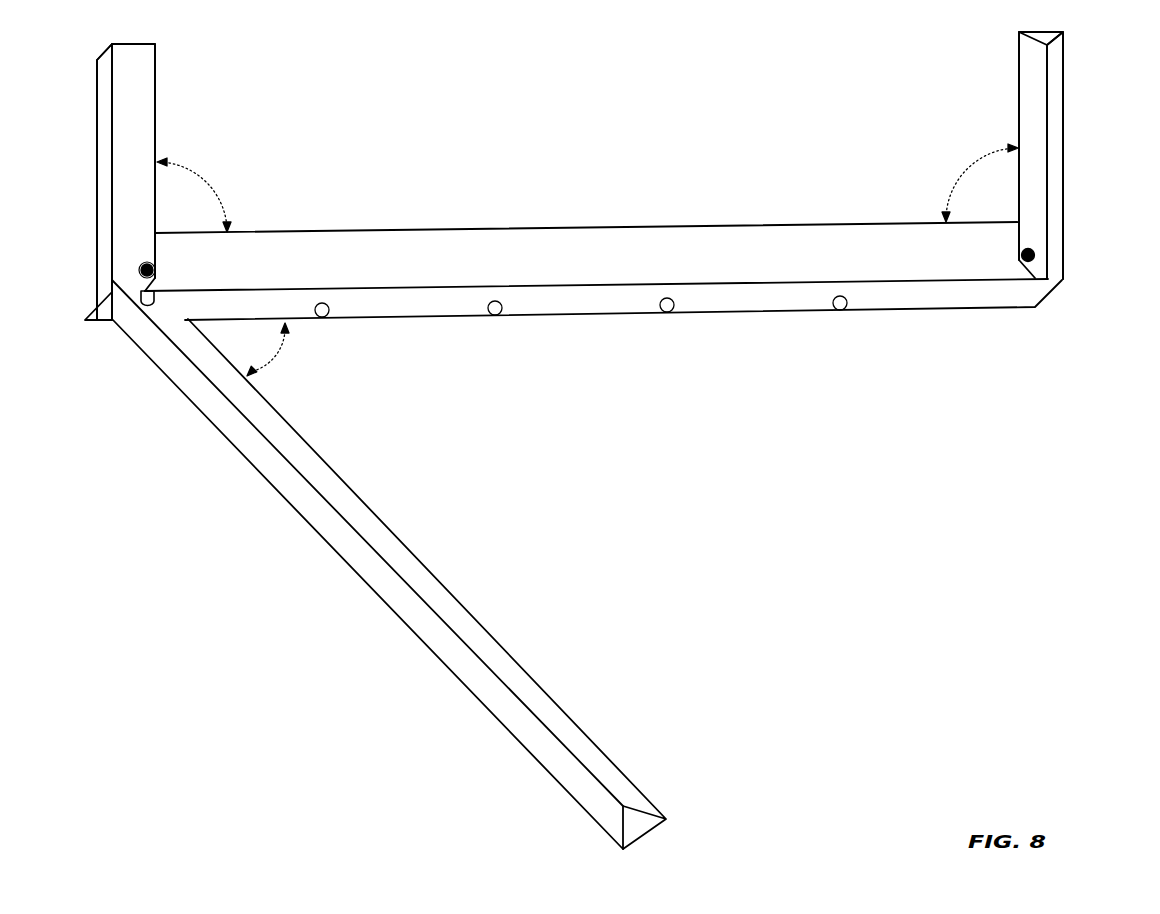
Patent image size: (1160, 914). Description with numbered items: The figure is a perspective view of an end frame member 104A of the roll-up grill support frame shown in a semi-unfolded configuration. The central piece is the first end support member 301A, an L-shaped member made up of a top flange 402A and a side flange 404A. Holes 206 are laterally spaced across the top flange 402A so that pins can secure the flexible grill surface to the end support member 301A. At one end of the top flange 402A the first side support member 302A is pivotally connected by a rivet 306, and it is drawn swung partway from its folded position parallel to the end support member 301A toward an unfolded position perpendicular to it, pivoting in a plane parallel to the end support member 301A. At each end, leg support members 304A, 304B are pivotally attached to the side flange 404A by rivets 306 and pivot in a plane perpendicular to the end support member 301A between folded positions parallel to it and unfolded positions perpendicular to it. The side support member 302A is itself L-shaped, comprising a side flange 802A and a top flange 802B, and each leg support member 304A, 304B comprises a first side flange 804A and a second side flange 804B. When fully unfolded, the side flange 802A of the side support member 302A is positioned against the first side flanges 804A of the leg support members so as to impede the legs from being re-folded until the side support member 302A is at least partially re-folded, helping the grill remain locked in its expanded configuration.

The end frame member 104A is at (775, 122).
The holes 206 is at (488, 302).
The first end support member 301A is at (603, 246).
The first side support member 302A is at (389, 564).
The leg support member 304A is at (1065, 148).
The leg support member 304B is at (97, 175).
The rivet 306 is at (141, 293).
The top flange 402A is at (918, 293).
The side flange 404A is at (587, 255).
The side flange 802A is at (380, 592).
The top flange 802B is at (418, 577).
The first side flange 804A is at (100, 103).
The second side flange 804B is at (140, 102).